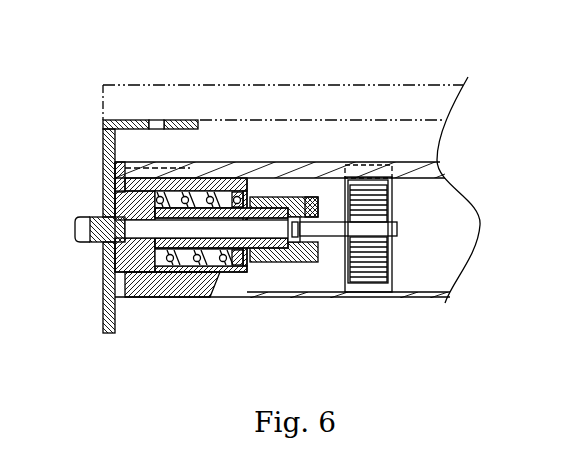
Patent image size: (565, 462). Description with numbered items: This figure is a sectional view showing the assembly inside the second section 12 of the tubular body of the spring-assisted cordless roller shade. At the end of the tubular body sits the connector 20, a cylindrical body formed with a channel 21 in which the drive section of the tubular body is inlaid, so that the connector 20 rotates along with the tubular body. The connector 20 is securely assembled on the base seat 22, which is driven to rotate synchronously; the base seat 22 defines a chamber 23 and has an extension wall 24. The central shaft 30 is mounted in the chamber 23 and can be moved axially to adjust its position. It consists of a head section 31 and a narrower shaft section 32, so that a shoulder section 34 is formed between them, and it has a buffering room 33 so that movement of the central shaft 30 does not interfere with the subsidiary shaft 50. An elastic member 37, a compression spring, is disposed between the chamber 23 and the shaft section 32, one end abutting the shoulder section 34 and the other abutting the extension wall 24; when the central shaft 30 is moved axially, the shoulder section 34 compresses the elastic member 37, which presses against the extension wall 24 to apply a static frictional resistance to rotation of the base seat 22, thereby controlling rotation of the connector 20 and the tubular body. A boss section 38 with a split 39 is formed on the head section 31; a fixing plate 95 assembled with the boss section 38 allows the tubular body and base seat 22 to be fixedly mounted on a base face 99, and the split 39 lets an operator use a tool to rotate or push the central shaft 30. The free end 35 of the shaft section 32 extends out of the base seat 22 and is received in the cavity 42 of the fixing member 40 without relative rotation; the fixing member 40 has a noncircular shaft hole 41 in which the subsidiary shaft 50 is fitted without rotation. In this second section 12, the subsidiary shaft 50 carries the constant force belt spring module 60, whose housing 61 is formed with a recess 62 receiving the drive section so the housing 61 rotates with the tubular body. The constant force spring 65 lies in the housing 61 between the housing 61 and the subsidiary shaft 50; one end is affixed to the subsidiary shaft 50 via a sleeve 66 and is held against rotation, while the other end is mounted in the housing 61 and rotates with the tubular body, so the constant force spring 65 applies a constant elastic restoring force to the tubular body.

The second section 12 is at (275, 165).
The connector 20 is at (158, 283).
The channel 21 is at (175, 160).
The base seat 22 is at (212, 193).
The chamber 23 is at (240, 270).
The extension wall 24 is at (243, 267).
The central shaft 30 is at (153, 246).
The head section 31 is at (110, 258).
The shaft section 32 is at (210, 258).
The buffering room 33 is at (235, 186).
The shoulder section 34 is at (140, 284).
The free end 35 is at (283, 245).
The elastic member 37 is at (188, 193).
The boss section 38 is at (97, 216).
The split 39 is at (78, 231).
The fixing member 40 is at (290, 198).
The shaft hole 41 is at (311, 203).
The cavity 42 is at (294, 242).
The subsidiary shaft 50 is at (330, 237).
The constant force belt spring module 60 is at (416, 256).
The housing 61 is at (374, 294).
The recess 62 is at (377, 160).
The constant force spring 65 is at (360, 272).
The sleeve 66 is at (382, 220).
The fixing plate 95 is at (141, 118).
The base face 99 is at (332, 84).